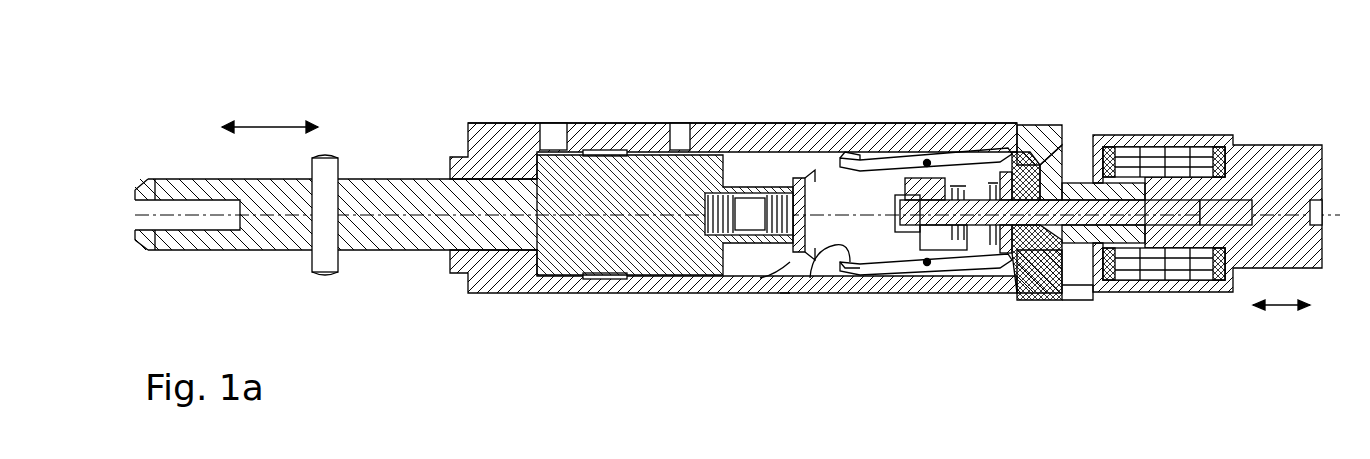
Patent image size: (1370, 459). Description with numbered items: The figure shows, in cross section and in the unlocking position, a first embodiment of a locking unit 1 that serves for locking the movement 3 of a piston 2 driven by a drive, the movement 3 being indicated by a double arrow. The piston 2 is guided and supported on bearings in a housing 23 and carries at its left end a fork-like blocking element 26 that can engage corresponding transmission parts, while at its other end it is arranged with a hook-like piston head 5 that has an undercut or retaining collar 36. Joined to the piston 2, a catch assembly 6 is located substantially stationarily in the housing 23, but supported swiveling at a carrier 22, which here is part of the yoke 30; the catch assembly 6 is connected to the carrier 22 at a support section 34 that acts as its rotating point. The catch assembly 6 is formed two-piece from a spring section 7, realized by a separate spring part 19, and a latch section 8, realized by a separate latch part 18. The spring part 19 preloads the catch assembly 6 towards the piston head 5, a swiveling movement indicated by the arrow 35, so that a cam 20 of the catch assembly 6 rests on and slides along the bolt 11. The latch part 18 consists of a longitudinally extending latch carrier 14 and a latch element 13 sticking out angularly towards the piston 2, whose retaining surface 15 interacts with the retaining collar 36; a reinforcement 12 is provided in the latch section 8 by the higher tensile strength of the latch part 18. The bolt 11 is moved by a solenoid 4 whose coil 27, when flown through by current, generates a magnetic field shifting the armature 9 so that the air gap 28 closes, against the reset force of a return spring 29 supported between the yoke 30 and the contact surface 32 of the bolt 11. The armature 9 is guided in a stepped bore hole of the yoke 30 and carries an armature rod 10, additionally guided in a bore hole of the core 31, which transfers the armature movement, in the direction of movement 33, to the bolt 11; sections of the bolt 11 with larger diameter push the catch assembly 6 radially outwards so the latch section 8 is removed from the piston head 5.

The locking unit 1 is at (548, 97).
The piston 2 is at (643, 295).
The movement 3 is at (265, 126).
The solenoid 4 is at (1183, 251).
The piston head 5 is at (800, 178).
The catch assembly 6 is at (965, 176).
The spring section 7 is at (1025, 374).
The latch section 8 is at (818, 374).
The armature 9 is at (1090, 168).
The armature rod 10 is at (1078, 300).
The bolt 11 is at (918, 158).
The reinforcement 12 is at (858, 150).
The latch element 13 is at (812, 255).
The latch carrier 14 is at (878, 292).
The retaining surface 15 is at (790, 270).
The latch part 18 is at (876, 158).
The spring part 19 is at (990, 182).
The cam 20 is at (930, 176).
The carrier 22 is at (1030, 172).
The housing 23 is at (718, 122).
The blocking element 26 is at (168, 172).
The coil 27 is at (1140, 150).
The air gap 28 is at (1183, 158).
The return spring 29 is at (1010, 160).
The yoke 30 is at (1072, 138).
The core 31 is at (1280, 168).
The contact surface 32 is at (968, 287).
The direction of movement 33 is at (1283, 320).
The support section 34 is at (1048, 158).
The arrow 35 is at (838, 196).
The retaining collar 36 is at (785, 292).